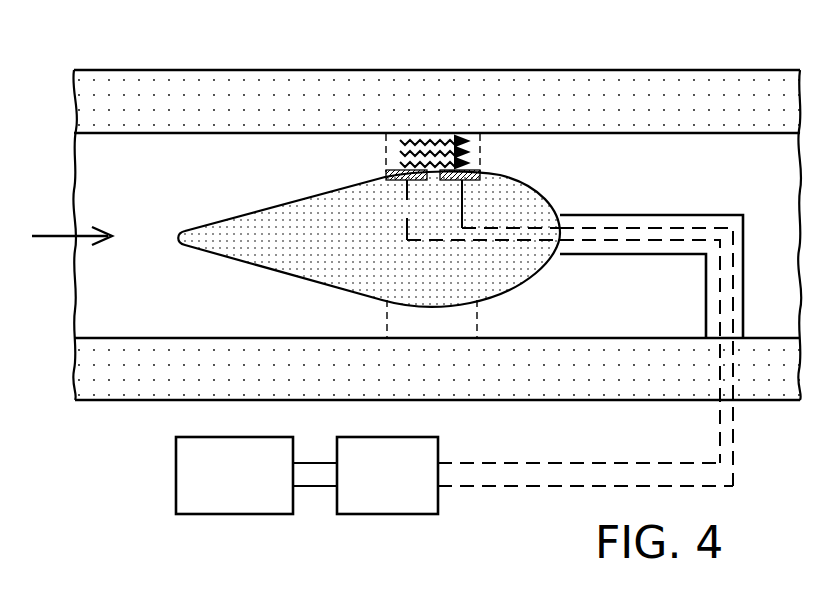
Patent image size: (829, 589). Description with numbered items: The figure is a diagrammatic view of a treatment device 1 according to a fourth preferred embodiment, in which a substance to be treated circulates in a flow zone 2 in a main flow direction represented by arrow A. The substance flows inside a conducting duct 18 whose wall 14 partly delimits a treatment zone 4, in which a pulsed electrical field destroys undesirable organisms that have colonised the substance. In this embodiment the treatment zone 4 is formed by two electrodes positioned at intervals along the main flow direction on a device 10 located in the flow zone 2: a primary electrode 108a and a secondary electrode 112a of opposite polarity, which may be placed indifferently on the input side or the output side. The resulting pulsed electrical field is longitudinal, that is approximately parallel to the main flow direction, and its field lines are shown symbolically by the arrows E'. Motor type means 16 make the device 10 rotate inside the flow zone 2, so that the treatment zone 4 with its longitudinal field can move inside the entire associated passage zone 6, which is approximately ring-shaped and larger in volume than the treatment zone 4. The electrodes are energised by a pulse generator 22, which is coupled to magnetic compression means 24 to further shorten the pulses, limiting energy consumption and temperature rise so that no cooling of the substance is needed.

The treatment device 1 is at (416, 290).
The flow zone 2 is at (158, 181).
The treatment zone 4 is at (398, 148).
The passage zone 6 is at (455, 322).
The device 10 is at (286, 269).
The wall 14 is at (709, 132).
The motor type means 16 is at (651, 247).
The conducting duct 18 is at (262, 96).
The pulse generator 22 is at (257, 506).
The magnetic compression means 24 is at (418, 512).
The primary electrode 108a is at (386, 170).
The secondary electrode 112a is at (483, 170).
The main flow direction arrow A is at (72, 227).
The field lines of the longitudinal pulsed electrical field E' is at (474, 80).